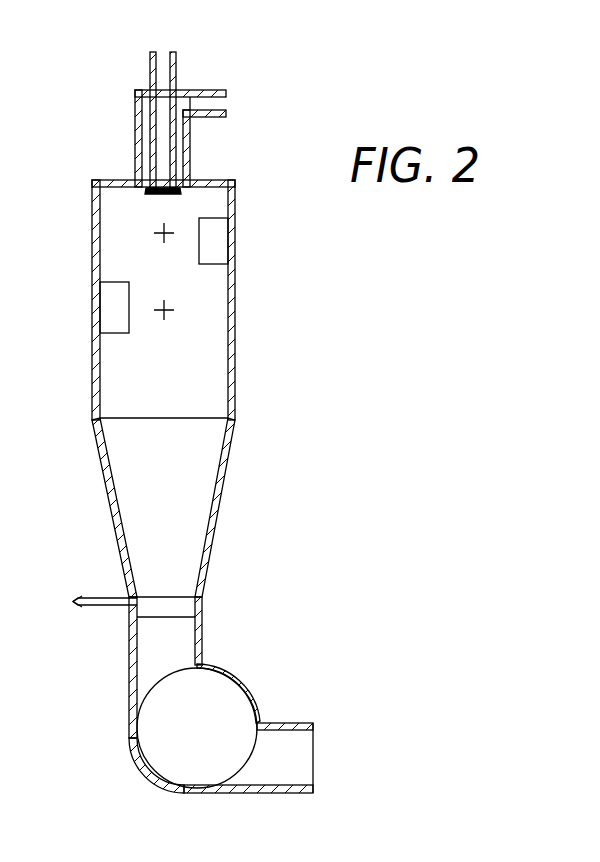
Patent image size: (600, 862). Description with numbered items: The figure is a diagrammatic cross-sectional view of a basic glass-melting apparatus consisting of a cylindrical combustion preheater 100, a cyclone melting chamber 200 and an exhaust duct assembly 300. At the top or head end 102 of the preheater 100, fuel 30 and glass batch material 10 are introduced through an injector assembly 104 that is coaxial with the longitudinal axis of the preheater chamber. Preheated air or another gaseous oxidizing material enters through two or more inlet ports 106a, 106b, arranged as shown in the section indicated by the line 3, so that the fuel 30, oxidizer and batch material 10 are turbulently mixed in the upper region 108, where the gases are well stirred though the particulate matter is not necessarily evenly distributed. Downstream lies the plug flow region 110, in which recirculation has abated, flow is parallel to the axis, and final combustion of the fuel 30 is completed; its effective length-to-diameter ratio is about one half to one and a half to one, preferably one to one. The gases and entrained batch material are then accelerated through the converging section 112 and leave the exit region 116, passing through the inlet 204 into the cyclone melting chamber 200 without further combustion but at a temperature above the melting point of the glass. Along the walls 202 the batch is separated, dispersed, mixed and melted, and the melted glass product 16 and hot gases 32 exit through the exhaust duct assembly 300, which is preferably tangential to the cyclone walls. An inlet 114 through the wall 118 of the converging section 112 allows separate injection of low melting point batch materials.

The glass batch material 10 is at (164, 51).
The fuel 30 is at (220, 104).
The injector assembly 104 is at (132, 127).
The head end 102 is at (208, 180).
The section line of FIG. 3 is at (277, 230).
The upper region 108 is at (157, 226).
The plug flow region 110 is at (181, 395).
The inlet port 106a is at (112, 305).
The inlet port 106b is at (221, 246).
The combustion preheater 100 is at (239, 369).
The wall of the converging section 118 is at (111, 511).
The converging section 112 is at (165, 522).
The exit region 116 is at (165, 636).
The inlet 114 is at (94, 594).
The inlet 204 is at (205, 651).
The cyclone melting chamber 200 is at (251, 690).
The walls 202 is at (237, 681).
The exhaust duct assembly 300 is at (300, 798).
The melted glass product 16 is at (159, 767).
The hot gases 32 is at (318, 748).